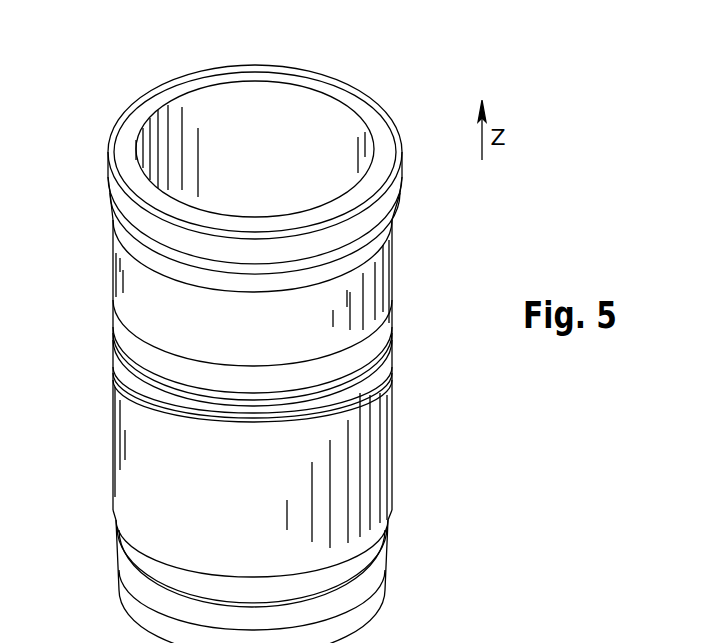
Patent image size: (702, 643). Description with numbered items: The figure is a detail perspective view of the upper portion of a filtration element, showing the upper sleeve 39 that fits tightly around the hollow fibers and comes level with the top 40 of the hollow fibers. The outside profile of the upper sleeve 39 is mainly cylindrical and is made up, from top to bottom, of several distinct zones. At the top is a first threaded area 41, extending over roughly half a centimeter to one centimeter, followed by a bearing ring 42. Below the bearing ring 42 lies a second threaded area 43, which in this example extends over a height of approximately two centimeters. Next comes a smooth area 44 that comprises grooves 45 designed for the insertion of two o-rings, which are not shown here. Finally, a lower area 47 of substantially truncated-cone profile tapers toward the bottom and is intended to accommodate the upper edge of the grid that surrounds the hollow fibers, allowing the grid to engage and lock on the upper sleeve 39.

The upper sleeve 39 is at (276, 340).
The top of the hollow fibers 40 is at (283, 128).
The first threaded area 41 is at (385, 199).
The bearing ring 42 is at (397, 225).
The second threaded area 43 is at (372, 283).
The smooth area 44 is at (408, 312).
The grooves 45 is at (113, 345).
The lower area 47 is at (408, 518).